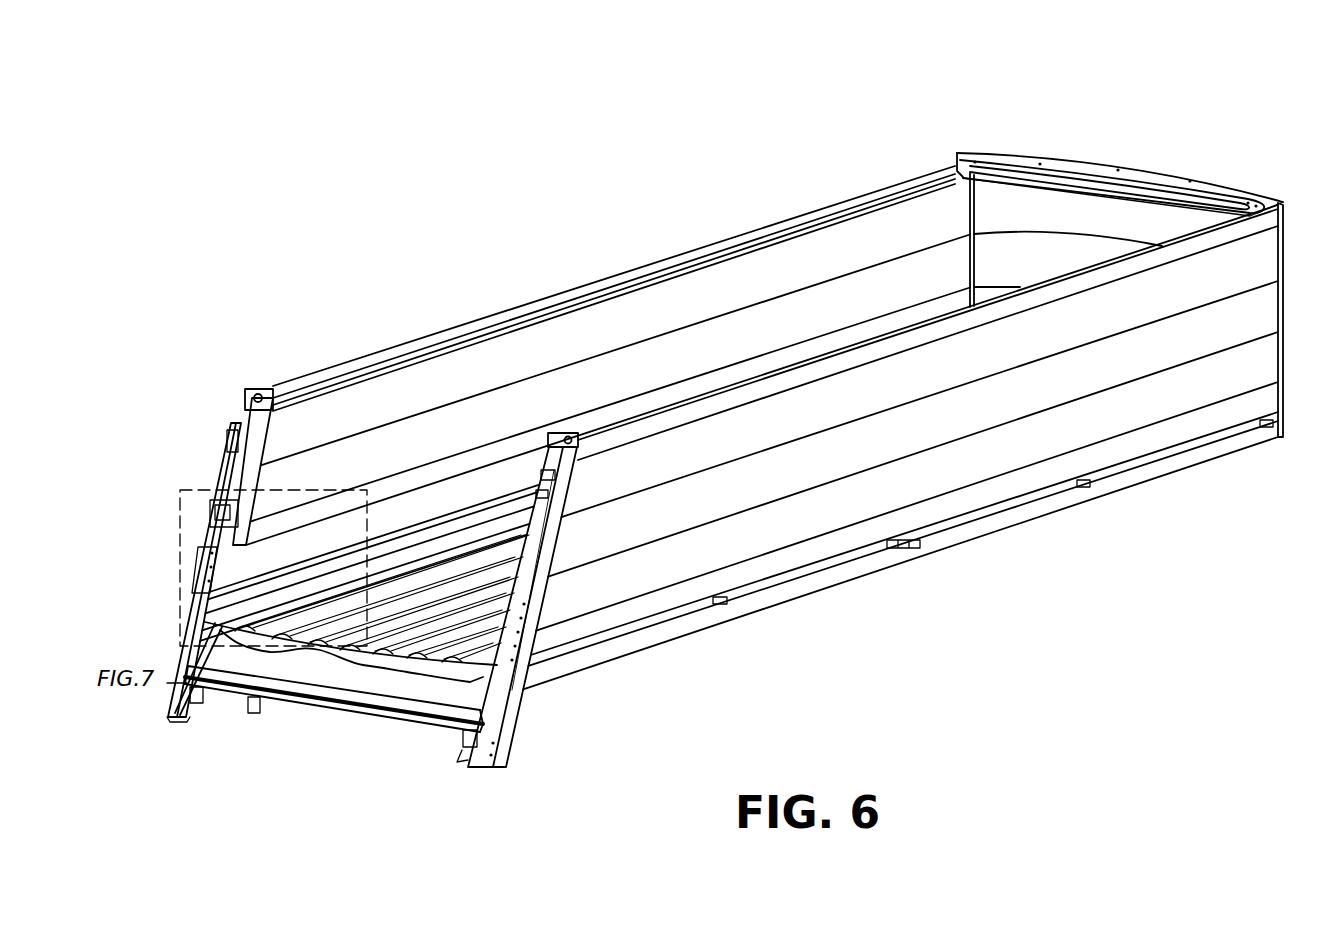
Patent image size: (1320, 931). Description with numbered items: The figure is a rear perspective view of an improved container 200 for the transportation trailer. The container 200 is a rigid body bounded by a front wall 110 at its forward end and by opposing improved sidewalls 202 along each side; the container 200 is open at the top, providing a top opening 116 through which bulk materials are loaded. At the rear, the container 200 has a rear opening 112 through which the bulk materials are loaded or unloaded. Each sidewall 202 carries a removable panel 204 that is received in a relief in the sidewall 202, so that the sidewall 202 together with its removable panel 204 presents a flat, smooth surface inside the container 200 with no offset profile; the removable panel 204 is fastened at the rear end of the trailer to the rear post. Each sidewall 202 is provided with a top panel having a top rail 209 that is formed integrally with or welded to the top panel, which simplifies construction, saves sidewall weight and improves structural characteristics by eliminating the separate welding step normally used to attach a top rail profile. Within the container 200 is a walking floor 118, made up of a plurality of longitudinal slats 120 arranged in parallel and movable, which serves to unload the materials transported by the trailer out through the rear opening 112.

The container 200 is at (403, 156).
The sidewall 202 is at (695, 300).
The removable panel 204 is at (387, 520).
The top rail 209 is at (790, 220).
The front wall 110 is at (1090, 217).
The top opening 116 is at (977, 141).
The rear opening 112 is at (208, 481).
The walking floor 118 is at (393, 604).
The longitudinal slats 120 is at (345, 668).